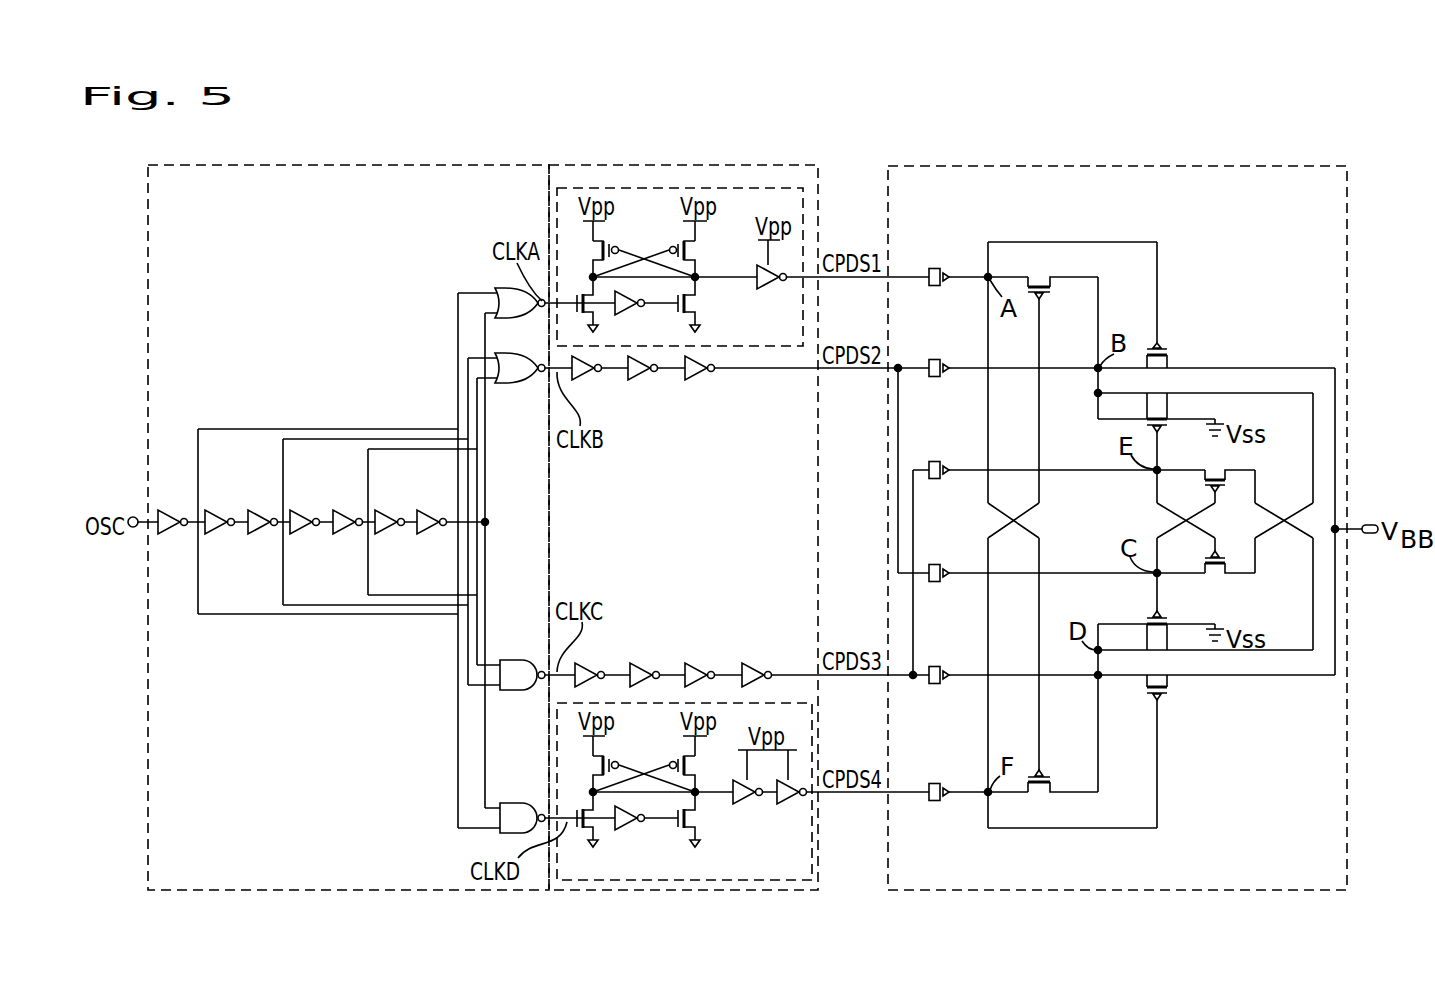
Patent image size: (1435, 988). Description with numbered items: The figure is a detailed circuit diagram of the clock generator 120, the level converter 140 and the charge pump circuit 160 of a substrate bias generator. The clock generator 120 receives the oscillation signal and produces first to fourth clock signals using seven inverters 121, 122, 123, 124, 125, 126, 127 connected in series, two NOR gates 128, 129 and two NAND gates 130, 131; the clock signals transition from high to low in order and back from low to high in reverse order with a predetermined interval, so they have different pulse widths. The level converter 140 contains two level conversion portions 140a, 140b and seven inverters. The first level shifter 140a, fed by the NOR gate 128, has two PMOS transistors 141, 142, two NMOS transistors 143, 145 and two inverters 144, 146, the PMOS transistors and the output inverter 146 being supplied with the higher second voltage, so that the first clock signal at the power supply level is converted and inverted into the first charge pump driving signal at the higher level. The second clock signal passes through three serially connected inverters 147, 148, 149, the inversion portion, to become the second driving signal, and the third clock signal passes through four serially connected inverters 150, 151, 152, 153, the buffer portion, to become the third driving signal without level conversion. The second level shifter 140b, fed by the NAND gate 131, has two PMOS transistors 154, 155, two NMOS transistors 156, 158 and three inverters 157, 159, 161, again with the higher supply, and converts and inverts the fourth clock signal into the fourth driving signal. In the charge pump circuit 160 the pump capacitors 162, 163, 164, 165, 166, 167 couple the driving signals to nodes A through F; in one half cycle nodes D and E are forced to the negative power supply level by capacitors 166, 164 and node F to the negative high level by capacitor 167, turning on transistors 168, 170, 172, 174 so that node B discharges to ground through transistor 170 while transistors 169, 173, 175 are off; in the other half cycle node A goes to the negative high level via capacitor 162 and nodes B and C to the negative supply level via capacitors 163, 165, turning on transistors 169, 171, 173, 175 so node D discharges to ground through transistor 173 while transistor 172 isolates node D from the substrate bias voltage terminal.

The clock generator 120 is at (492, 164).
The inverter 121 is at (168, 533).
The inverter 122 is at (213, 533).
The inverter 123 is at (256, 510).
The inverter 124 is at (303, 533).
The inverter 125 is at (342, 510).
The inverter 126 is at (387, 533).
The inverter 127 is at (427, 510).
The NOR gate 128 is at (505, 289).
The NOR gate 129 is at (516, 385).
The NAND gate 130 is at (507, 658).
The NAND gate 131 is at (507, 800).
The level converter 140 is at (760, 164).
The level conversion portion (first level shifter) 140a is at (652, 187).
The level conversion portion (second level shifter) 140b is at (742, 882).
The PMOS transistor 141 is at (626, 258).
The PMOS transistor 142 is at (661, 258).
The NMOS transistor 143 is at (590, 314).
The inverter 144 is at (646, 296).
The NMOS transistor 145 is at (706, 304).
The inverter 146 is at (771, 292).
The inverter 147 is at (593, 382).
The inverter 148 is at (648, 382).
The inverter 149 is at (705, 382).
The inverter 150 is at (597, 666).
The inverter 151 is at (652, 666).
The inverter 152 is at (707, 666).
The inverter 153 is at (763, 666).
The PMOS transistor 154 is at (626, 773).
The PMOS transistor 155 is at (661, 773).
The NMOS transistor 156 is at (594, 829).
The inverter 157 is at (646, 811).
The NMOS transistor 158 is at (697, 829).
The inverter 159 is at (744, 808).
The inverter 161 is at (793, 808).
The charge pump circuit 160 is at (1295, 164).
The pump capacitor 162 is at (937, 266).
The pump capacitor 163 is at (937, 358).
The pump capacitor 164 is at (937, 460).
The pump capacitor 165 is at (937, 562).
The pump capacitor 166 is at (937, 664).
The pump capacitor 167 is at (937, 781).
The transistor 168 is at (1059, 274).
The PMOS transistor 169 is at (1155, 370).
The PMOS transistor 170 is at (1155, 412).
The PMOS transistor 171 is at (1059, 795).
The PMOS transistor 172 is at (1155, 674).
The PMOS transistor 173 is at (1155, 631).
The PMOS transistor 174 is at (1227, 576).
The PMOS transistor 175 is at (1226, 468).